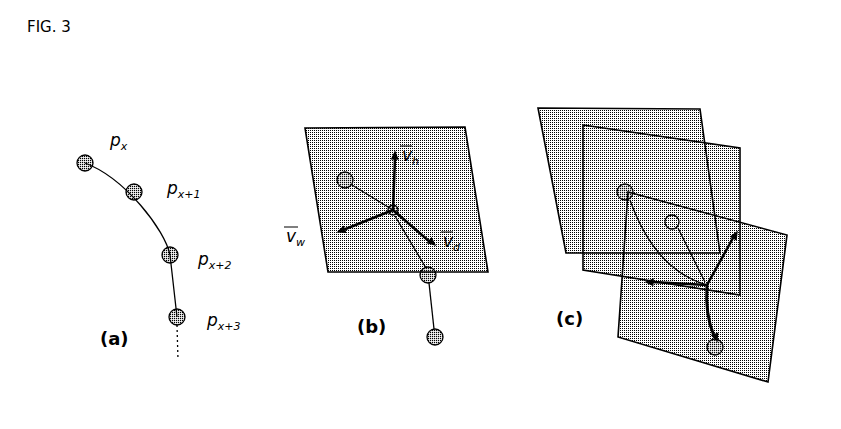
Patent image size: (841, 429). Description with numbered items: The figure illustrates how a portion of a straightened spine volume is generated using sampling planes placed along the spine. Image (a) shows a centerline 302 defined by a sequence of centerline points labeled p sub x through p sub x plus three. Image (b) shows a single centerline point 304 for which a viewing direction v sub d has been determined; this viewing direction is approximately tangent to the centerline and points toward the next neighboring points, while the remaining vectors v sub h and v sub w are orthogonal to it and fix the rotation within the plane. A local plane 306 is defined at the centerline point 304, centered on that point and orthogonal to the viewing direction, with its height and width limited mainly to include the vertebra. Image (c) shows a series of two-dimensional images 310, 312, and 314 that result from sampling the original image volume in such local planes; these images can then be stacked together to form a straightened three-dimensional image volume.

The centerline 302 is at (153, 229).
The centerline point 304 is at (392, 217).
The local plane 306 is at (363, 126).
The 2D image 310 is at (659, 105).
The 2D image 312 is at (722, 156).
The 2D image 314 is at (769, 230).